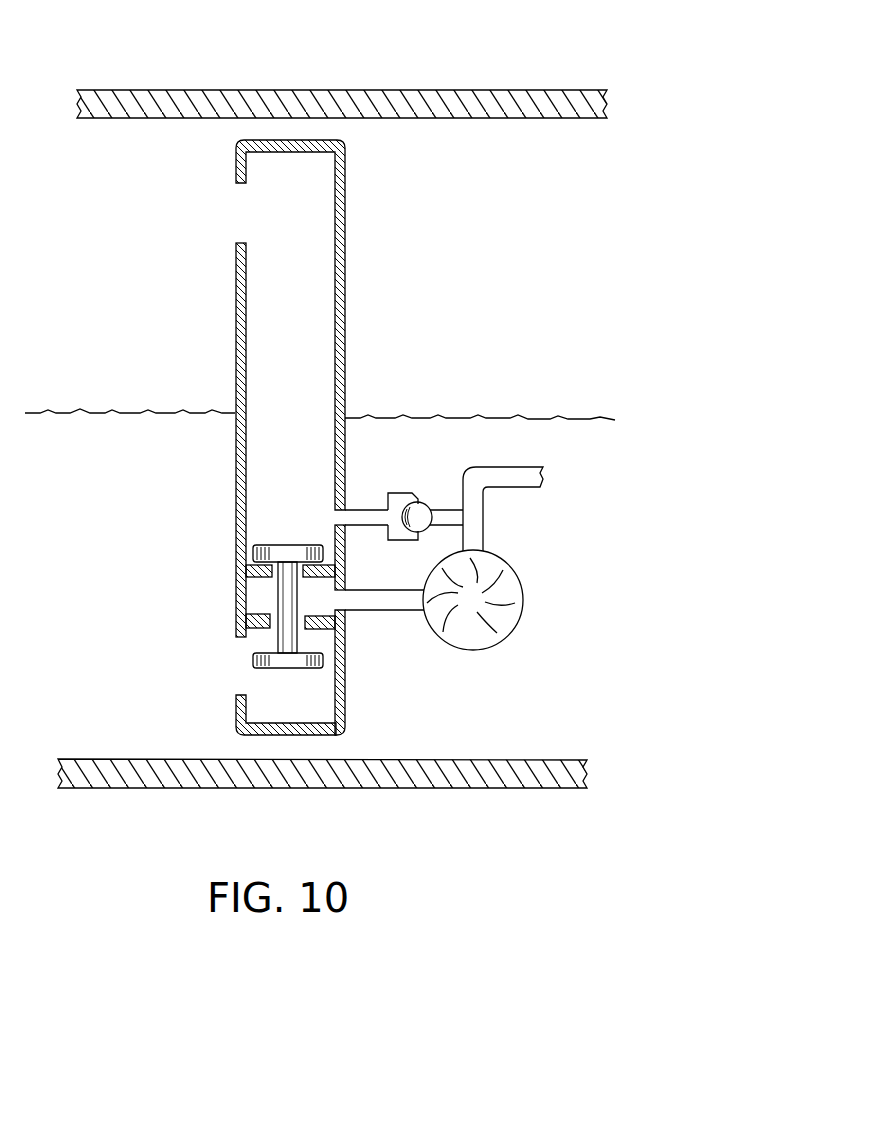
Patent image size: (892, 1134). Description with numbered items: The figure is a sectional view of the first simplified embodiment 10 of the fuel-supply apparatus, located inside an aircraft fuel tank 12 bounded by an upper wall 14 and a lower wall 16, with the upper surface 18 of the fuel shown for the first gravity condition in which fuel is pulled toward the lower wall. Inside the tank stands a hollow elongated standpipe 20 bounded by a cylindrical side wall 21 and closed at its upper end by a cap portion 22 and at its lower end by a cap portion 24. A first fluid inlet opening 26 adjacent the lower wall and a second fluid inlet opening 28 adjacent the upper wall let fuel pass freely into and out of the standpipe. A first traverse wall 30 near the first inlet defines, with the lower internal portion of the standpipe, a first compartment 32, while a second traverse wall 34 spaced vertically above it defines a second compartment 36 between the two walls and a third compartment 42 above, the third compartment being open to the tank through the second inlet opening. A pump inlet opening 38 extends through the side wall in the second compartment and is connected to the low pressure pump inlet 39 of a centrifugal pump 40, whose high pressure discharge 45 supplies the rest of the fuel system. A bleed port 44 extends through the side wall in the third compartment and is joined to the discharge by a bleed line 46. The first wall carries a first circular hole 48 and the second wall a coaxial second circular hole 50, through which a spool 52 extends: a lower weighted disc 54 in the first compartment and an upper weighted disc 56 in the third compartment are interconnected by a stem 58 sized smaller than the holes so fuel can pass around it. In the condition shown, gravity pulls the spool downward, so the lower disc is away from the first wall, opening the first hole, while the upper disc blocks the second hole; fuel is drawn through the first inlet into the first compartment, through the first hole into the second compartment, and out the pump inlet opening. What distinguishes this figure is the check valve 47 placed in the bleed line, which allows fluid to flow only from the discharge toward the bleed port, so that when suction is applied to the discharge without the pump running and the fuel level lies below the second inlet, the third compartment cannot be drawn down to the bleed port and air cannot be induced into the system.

The first simplified embodiment 10 is at (470, 274).
The aircraft fuel tank 12 is at (392, 47).
The upper wall 14 is at (203, 89).
The lower wall 16 is at (333, 788).
The upper surface of the fuel 18 is at (97, 398).
The standpipe 20 is at (284, 443).
The cylindrical side wall 21 is at (345, 228).
The cap portion 22 is at (310, 140).
The cap portion 24 is at (270, 731).
The first fluid inlet opening 26 is at (218, 658).
The second fluid inlet opening 28 is at (220, 203).
The first traverse wall 30 is at (255, 620).
The first compartment 32 is at (315, 710).
The second traverse wall 34 is at (247, 555).
The second compartment 36 is at (272, 587).
The pump inlet opening 38 is at (337, 593).
The low pressure pump inlet 39 is at (365, 611).
The pump 40 is at (523, 612).
The third compartment 42 is at (292, 392).
The bleed port 44 is at (335, 512).
The high pressure discharge 45 is at (520, 491).
The bleed line 46 is at (364, 511).
The check valve 47 is at (427, 507).
The first circular hole 48 is at (302, 626).
The second circular hole 50 is at (302, 583).
The spool 52 is at (280, 670).
The lower weighted disc 54 is at (255, 660).
The upper weighted disc 56 is at (262, 548).
The stem 58 is at (287, 605).